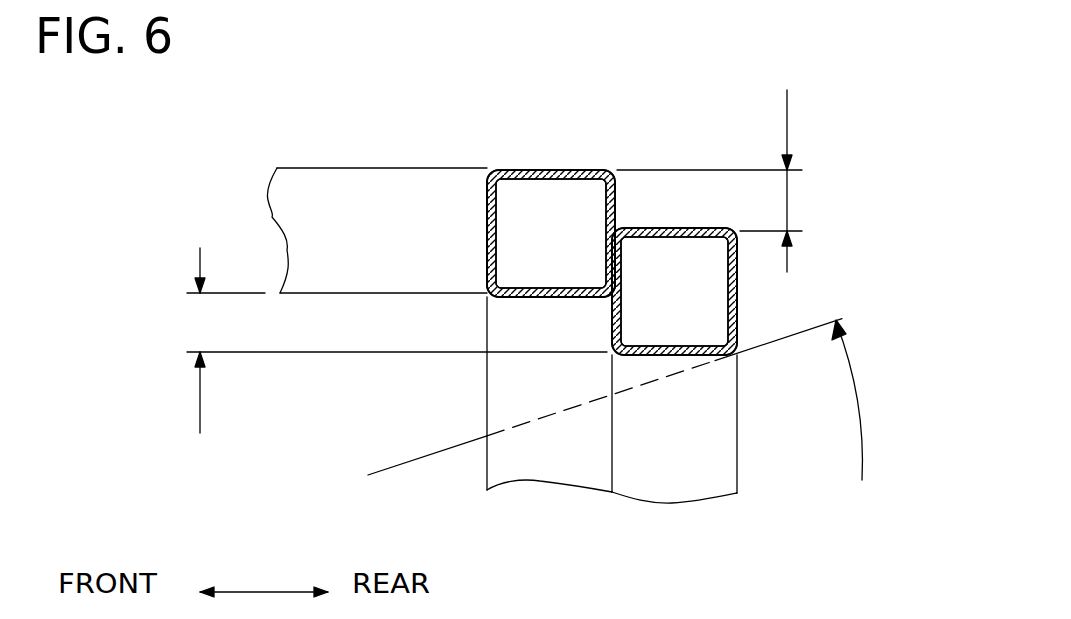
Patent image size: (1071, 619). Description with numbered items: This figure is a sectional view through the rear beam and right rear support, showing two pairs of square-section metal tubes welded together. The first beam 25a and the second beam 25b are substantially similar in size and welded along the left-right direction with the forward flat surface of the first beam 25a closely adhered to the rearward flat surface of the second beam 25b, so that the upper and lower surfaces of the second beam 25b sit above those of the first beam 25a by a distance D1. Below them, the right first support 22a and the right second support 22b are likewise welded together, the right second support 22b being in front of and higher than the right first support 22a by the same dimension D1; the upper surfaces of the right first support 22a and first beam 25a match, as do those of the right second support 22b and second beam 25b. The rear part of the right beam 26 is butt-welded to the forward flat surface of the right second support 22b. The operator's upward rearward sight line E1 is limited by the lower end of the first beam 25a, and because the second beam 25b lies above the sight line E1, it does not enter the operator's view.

The right beam 26 is at (287, 210).
The second beam 25b is at (487, 235).
The first beam 25a is at (738, 293).
The right second support 22b is at (552, 448).
The right first support 22a is at (680, 448).
The sight line E1 is at (453, 447).
The dimension D1 is at (478, 261).